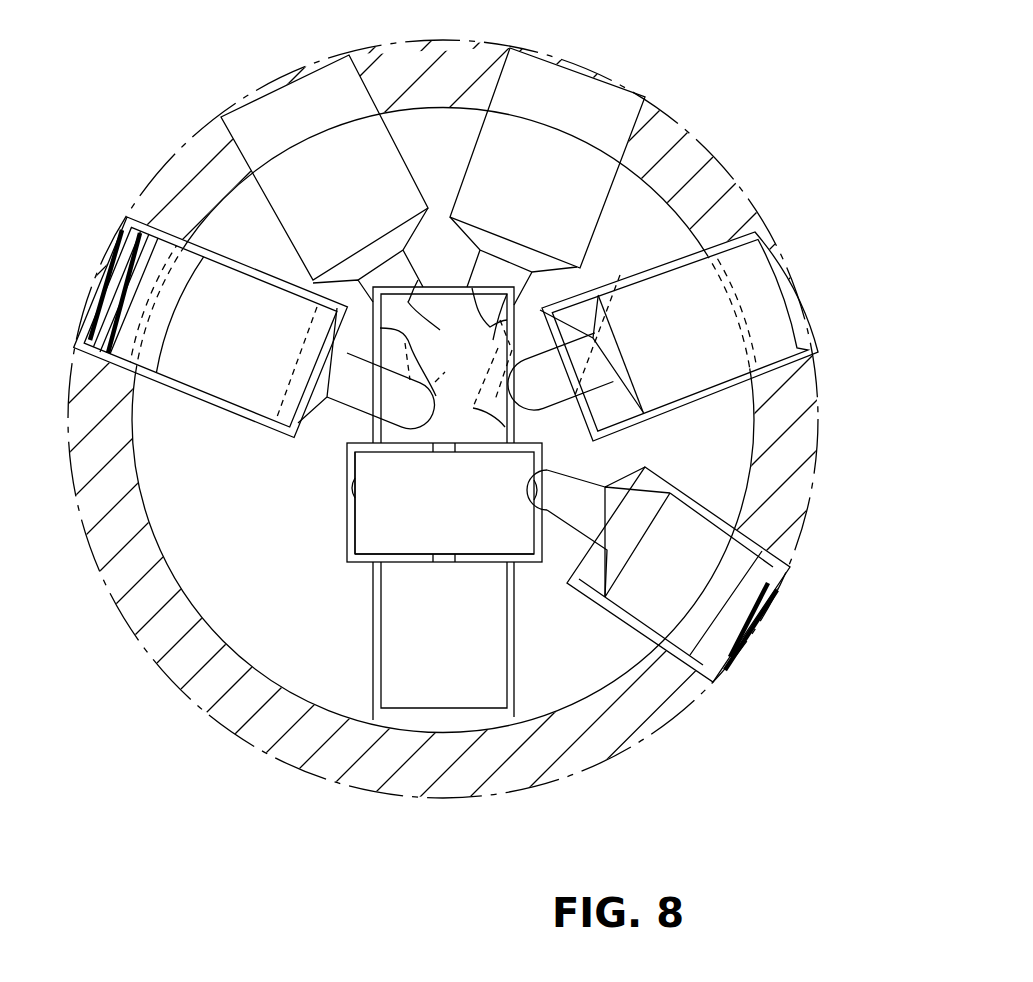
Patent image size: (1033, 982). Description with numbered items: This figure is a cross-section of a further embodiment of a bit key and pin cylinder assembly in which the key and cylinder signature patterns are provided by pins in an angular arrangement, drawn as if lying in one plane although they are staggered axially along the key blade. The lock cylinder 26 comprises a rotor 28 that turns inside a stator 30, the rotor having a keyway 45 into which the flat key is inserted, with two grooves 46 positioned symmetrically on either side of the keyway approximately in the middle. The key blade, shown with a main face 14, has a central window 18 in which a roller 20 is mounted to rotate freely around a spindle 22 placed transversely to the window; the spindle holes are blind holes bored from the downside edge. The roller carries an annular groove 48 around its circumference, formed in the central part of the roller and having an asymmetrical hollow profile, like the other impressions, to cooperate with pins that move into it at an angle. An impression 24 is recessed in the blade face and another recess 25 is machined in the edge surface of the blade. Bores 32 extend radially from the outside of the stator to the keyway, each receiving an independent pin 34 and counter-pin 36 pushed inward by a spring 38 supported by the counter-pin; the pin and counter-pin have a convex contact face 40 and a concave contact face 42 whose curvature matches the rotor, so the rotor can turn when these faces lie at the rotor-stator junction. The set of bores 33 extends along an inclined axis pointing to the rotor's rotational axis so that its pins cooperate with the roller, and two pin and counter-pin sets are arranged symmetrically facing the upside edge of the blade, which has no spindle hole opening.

The main face 14 is at (380, 637).
The window 18 is at (482, 556).
The roller 20 is at (458, 518).
The spindle 22 is at (445, 557).
The impression 24 is at (437, 384).
The recess 25 is at (484, 322).
The lock cylinder 26 is at (659, 99).
The rotor 28 is at (233, 535).
The stator 30 is at (166, 172).
The bore 32 is at (230, 417).
The set of bores 33 is at (620, 622).
The pin 34 is at (246, 353).
The counter-pin 36 is at (128, 322).
The spring 38 is at (120, 267).
The convex contact face 40 is at (768, 607).
The concave contact face 42 is at (695, 583).
The keyway 45 is at (517, 655).
The groove 46 is at (347, 502).
The annular groove 48 is at (355, 487).